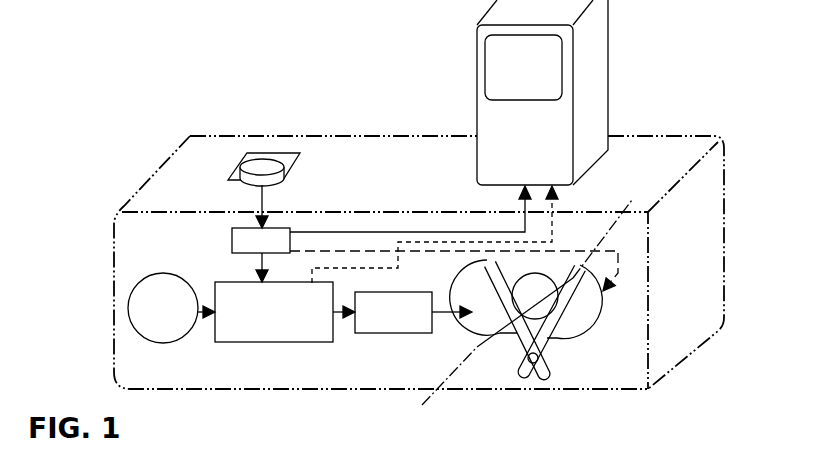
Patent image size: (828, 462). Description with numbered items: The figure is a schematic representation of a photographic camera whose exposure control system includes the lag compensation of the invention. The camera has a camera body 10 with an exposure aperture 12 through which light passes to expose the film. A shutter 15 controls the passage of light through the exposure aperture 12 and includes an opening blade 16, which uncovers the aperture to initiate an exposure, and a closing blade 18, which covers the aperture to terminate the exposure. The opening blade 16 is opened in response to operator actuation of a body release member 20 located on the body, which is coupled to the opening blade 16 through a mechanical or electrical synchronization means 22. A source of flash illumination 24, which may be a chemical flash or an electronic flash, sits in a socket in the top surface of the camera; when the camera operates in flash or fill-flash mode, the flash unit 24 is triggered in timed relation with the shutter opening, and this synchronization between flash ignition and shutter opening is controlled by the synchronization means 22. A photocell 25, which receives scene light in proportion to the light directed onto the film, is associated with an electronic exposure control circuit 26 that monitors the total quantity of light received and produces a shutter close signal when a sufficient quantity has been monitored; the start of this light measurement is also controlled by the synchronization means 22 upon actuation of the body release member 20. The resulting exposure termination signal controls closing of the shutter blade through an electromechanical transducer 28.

The camera body 10 is at (655, 153).
The exposure aperture 12 is at (568, 264).
The shutter 15 is at (572, 361).
The opening blade 16 is at (587, 328).
The closing blade 18 is at (475, 331).
The body release member 20 is at (266, 165).
The synchronization means 22 is at (232, 241).
The source of flash illumination 24 is at (606, 73).
The photocell 25 is at (173, 343).
The electronic exposure control circuit 26 is at (263, 342).
The electromechanical transducer 28 is at (376, 333).